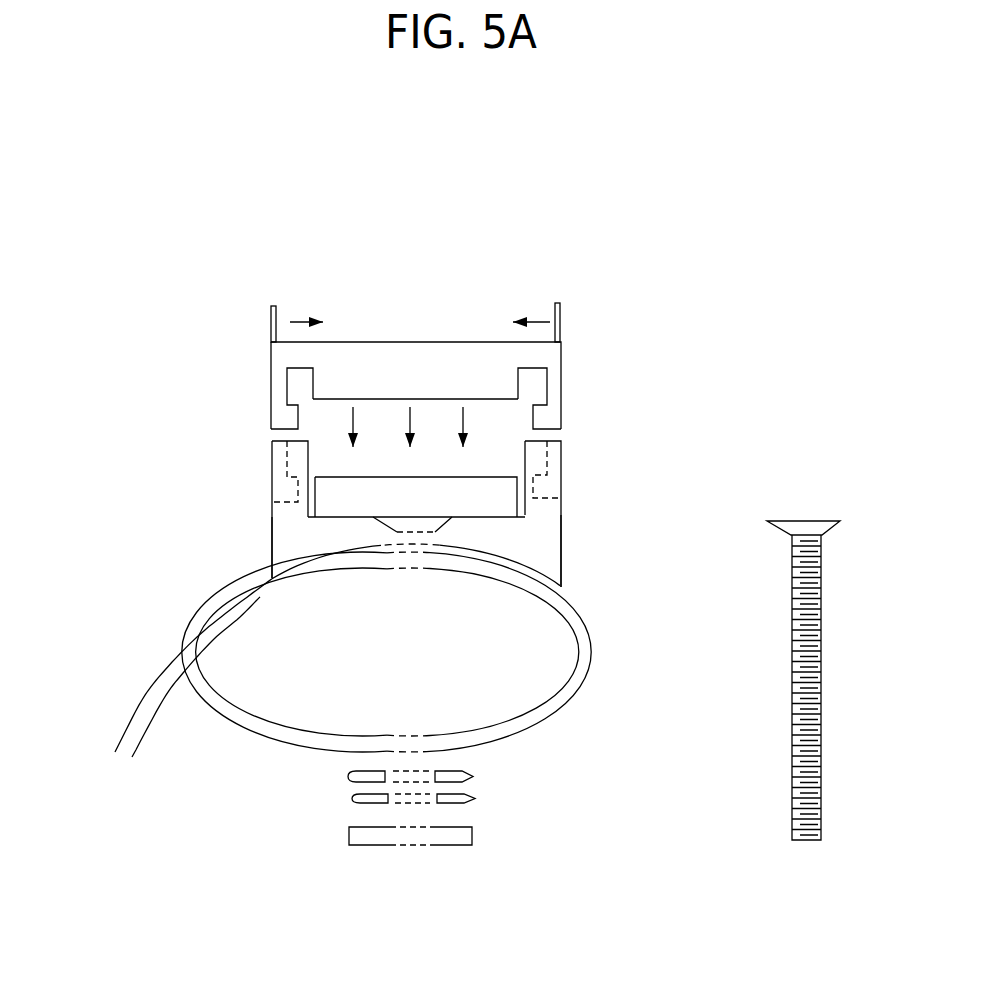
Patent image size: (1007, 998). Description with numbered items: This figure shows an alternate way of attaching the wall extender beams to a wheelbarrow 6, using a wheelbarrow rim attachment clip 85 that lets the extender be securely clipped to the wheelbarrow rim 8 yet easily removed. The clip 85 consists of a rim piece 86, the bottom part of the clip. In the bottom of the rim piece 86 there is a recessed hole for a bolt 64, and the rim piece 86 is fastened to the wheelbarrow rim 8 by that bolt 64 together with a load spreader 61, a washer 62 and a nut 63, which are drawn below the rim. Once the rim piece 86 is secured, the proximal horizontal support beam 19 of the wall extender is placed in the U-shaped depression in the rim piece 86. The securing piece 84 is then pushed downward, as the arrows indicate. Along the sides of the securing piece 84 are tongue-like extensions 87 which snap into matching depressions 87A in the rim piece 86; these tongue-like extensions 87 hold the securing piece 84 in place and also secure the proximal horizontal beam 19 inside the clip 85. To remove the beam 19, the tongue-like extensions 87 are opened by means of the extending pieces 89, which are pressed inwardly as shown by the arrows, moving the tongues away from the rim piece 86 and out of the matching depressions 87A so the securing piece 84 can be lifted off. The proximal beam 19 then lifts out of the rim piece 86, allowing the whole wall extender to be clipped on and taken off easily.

The wheelbarrow 6 is at (165, 670).
The wheelbarrow rim 8 is at (590, 632).
The proximal horizontal support beam 19 is at (345, 498).
The load spreader 61 is at (473, 773).
The washer 62 is at (475, 797).
The nut 63 is at (472, 835).
The bolt 64 is at (818, 606).
The securing piece 84 is at (443, 328).
The wheelbarrow rim attachment clip 85 is at (580, 360).
The rim piece 86 is at (257, 488).
The tongue-like extensions 87 is at (260, 407).
The matching depressions 87A is at (272, 455).
The extending piece 89 is at (273, 295).